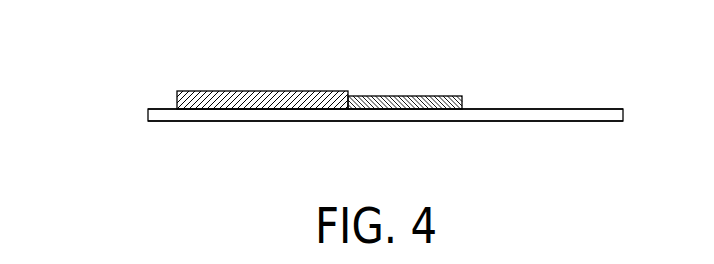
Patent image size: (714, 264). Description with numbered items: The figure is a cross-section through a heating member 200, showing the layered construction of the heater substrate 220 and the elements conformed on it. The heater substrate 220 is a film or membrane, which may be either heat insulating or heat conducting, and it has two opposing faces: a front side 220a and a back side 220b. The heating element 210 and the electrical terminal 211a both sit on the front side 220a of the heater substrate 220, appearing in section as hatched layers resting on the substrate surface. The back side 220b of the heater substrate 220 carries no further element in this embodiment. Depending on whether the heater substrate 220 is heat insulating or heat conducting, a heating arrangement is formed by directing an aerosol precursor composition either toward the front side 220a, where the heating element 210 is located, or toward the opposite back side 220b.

The electronic device assembly 200 is at (118, 49).
The heating element 210 is at (403, 95).
The electrical terminal 211a is at (237, 90).
The heater substrate 220 is at (148, 116).
The front side 220a is at (551, 95).
The back side 220b is at (551, 135).